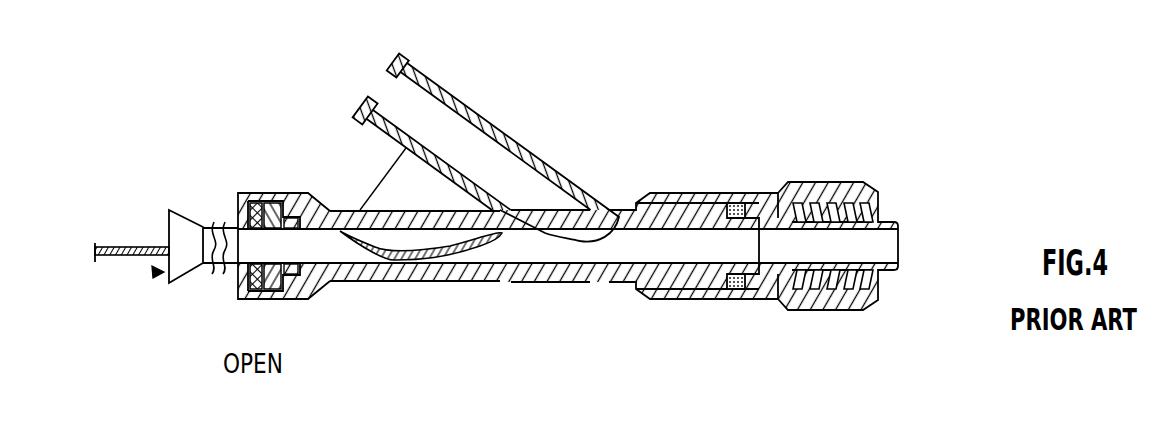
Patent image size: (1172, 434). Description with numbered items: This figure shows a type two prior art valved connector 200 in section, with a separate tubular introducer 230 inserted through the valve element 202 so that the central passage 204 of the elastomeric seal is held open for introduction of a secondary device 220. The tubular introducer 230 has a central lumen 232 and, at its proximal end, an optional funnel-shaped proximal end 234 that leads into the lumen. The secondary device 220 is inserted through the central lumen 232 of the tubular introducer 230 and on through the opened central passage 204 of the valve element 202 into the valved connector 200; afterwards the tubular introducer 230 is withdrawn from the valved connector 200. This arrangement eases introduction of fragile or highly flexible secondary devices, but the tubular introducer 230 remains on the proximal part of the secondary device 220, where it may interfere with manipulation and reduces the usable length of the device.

The valved connector 200 is at (678, 110).
The valve element 202 is at (266, 197).
The central passage 204 is at (242, 266).
The secondary device 220 is at (127, 246).
The tubular introducer 230 is at (158, 272).
The central lumen 232 is at (208, 232).
The funnel-shaped proximal end 234 is at (185, 213).